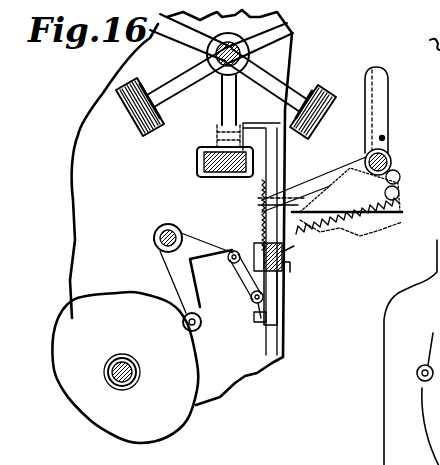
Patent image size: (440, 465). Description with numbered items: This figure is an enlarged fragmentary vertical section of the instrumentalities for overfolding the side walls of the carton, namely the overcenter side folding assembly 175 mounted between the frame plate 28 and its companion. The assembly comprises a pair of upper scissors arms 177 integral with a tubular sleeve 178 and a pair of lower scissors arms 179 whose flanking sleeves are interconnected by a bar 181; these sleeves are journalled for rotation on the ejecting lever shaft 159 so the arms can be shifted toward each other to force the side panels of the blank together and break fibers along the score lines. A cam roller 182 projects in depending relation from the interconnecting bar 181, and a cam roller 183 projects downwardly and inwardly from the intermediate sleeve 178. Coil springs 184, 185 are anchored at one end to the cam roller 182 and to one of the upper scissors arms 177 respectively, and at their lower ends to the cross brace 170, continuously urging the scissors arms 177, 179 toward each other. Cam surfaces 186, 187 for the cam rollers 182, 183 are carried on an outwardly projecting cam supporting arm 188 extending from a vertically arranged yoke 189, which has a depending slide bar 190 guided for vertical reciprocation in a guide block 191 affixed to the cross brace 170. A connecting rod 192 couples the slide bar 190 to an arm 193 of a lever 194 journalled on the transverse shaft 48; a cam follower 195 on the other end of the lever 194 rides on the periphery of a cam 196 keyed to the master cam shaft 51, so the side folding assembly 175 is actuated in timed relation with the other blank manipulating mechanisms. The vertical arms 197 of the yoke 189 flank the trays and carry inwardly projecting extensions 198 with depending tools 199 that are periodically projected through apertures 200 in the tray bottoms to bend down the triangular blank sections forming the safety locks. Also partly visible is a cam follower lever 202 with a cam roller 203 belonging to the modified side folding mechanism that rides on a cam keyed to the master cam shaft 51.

The frame plate 28 is at (281, 353).
The transverse shaft 48 is at (168, 226).
The master cam shaft 51 is at (138, 374).
The ejecting lever shaft 159 is at (392, 158).
The cross brace 170 is at (290, 272).
The side folding assembly 175 is at (392, 128).
The upper scissors arms 177 is at (386, 110).
The tubular sleeve 178 is at (400, 192).
The lower scissors arms 179 is at (342, 135).
The bar 181 is at (401, 174).
The cam roller 182 is at (404, 212).
The cam roller 183 is at (378, 137).
The coil spring 184 is at (346, 228).
The coil spring 185 is at (260, 198).
The cam surface 186 is at (396, 214).
The cam surface 187 is at (312, 166).
The cam supporting arm 188 is at (262, 222).
The yoke 189 is at (258, 206).
The slide bar 190 is at (280, 308).
The guide block 191 is at (286, 253).
The connecting rod 192 is at (250, 297).
The arm 193 is at (198, 230).
The lever 194 is at (156, 248).
The cam follower 195 is at (200, 330).
The cam 196 is at (162, 418).
The vertical arms 197 is at (278, 160).
The extensions 198 is at (266, 122).
The tools 199 is at (216, 134).
The apertures 200 is at (198, 158).
The cam follower lever 202 is at (433, 333).
The cam roller 203 is at (418, 381).